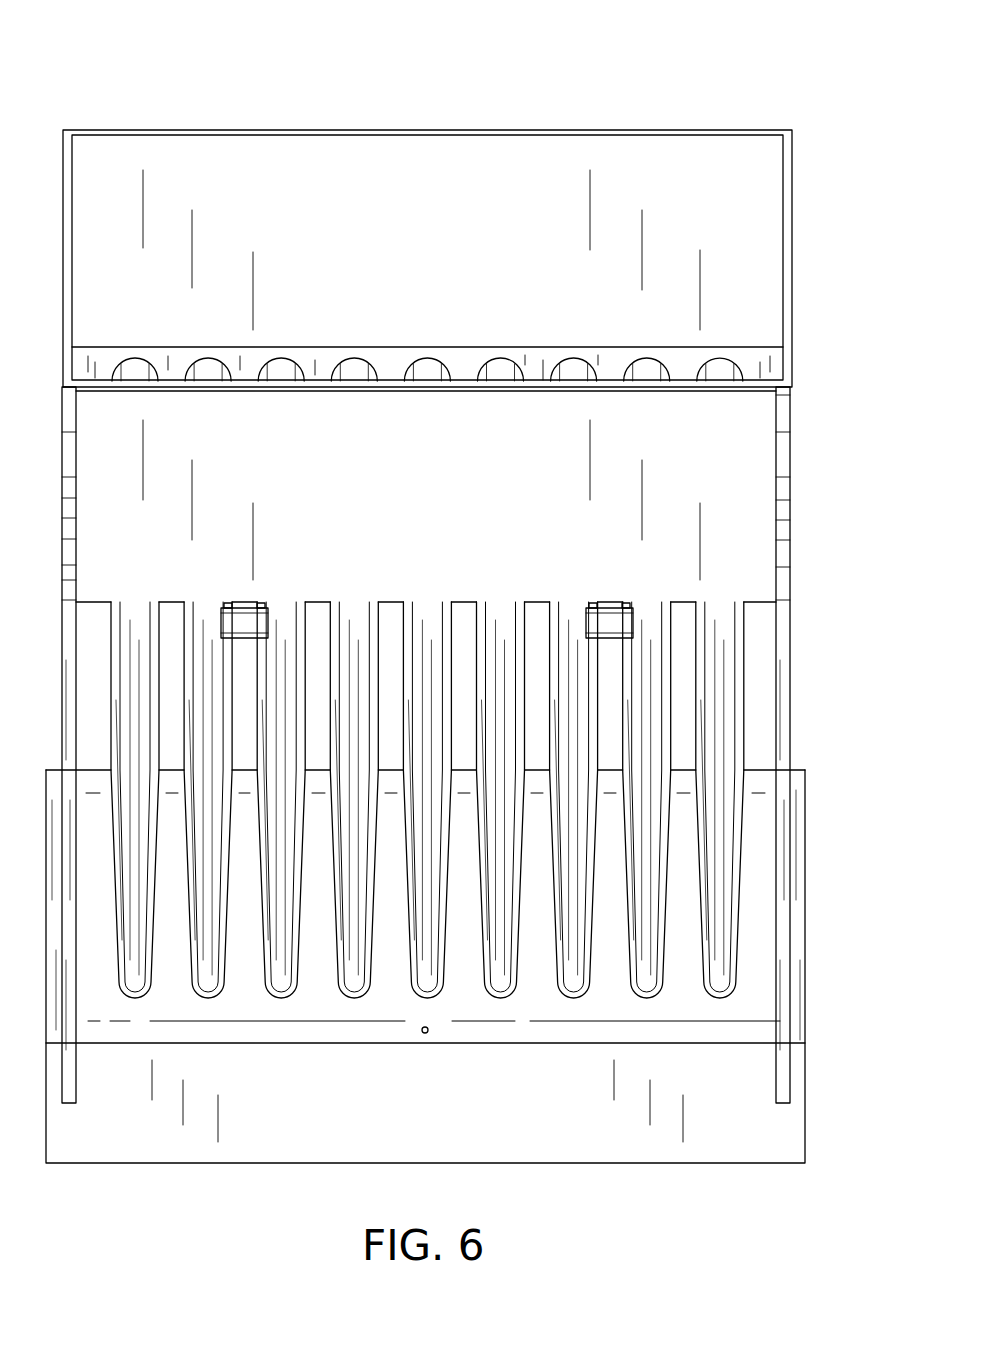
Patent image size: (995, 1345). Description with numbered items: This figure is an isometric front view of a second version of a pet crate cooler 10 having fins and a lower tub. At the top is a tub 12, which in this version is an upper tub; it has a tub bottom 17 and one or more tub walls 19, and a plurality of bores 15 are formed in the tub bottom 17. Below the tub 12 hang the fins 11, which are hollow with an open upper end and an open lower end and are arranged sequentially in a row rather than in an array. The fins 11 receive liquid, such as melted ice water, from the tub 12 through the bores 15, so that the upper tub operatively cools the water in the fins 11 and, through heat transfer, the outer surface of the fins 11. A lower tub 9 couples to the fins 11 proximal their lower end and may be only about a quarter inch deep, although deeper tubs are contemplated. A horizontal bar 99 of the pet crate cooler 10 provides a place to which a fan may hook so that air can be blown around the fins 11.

The lower tub 9 is at (168, 1097).
The pet crate cooler 10 is at (306, 95).
The fins 11 is at (718, 840).
The tub 12 is at (115, 182).
The bores 15 is at (435, 370).
The tub bottom 17 is at (550, 362).
The tub walls 19 is at (728, 508).
The horizontal bar 99 is at (613, 620).